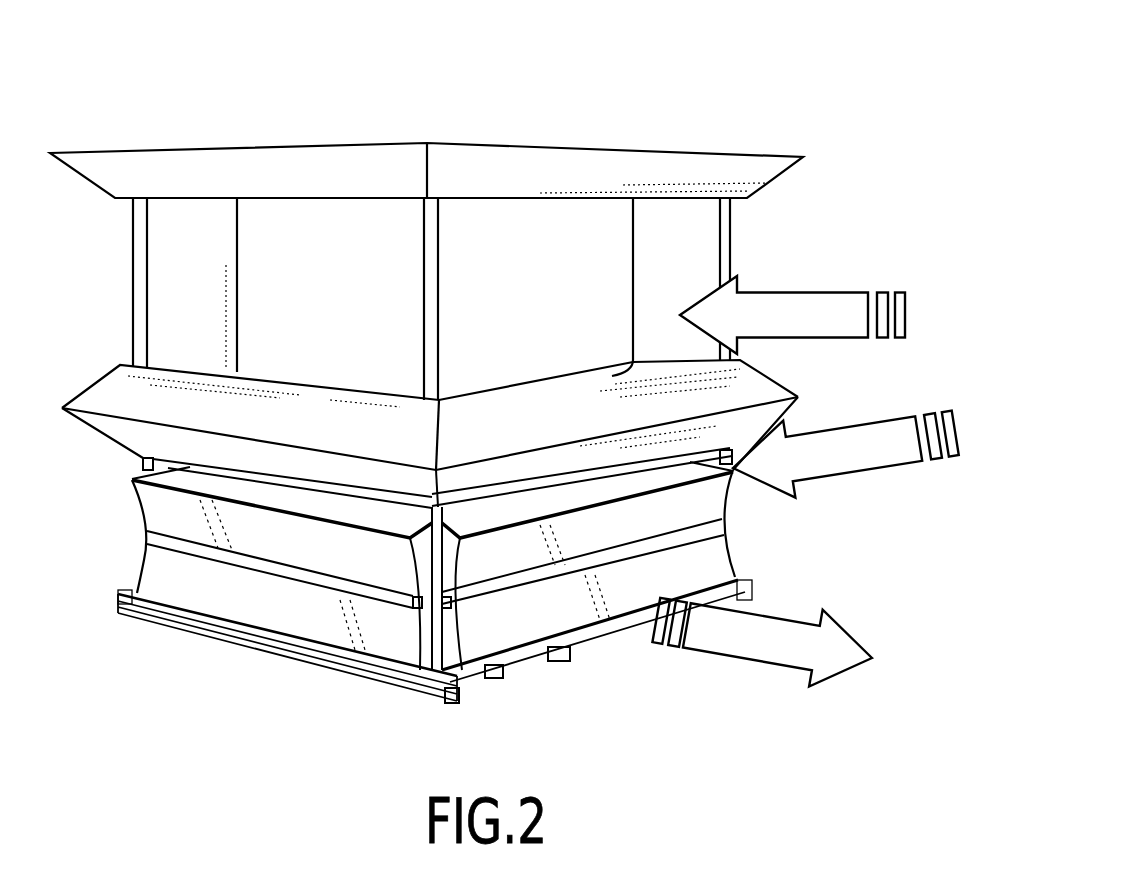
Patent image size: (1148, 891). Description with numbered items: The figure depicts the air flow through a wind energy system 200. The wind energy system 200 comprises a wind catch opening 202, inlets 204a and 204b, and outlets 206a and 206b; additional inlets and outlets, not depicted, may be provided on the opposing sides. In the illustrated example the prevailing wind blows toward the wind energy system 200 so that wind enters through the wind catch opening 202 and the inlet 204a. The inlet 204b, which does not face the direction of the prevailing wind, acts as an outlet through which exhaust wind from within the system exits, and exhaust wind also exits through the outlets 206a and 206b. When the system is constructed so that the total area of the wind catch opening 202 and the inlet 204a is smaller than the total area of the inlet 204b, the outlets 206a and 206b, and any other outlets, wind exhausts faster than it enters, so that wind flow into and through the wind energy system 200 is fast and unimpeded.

The wind energy system 200 is at (745, 77).
The wind catch opening 202 is at (695, 232).
The inlet 204a is at (717, 498).
The inlet 204b is at (148, 506).
The outlet 206a is at (713, 572).
The outlet 206b is at (150, 562).